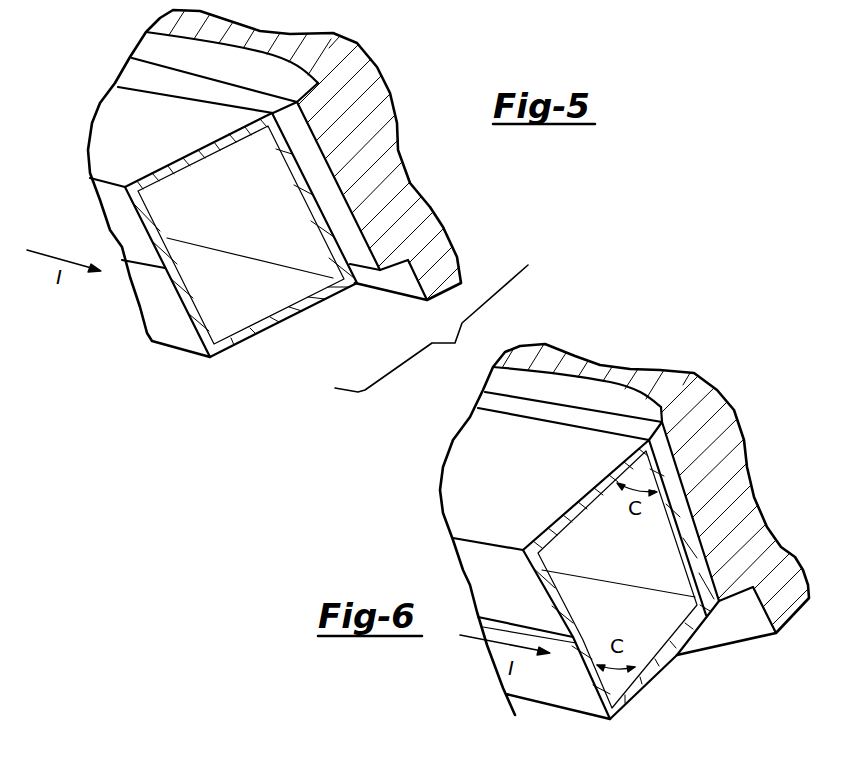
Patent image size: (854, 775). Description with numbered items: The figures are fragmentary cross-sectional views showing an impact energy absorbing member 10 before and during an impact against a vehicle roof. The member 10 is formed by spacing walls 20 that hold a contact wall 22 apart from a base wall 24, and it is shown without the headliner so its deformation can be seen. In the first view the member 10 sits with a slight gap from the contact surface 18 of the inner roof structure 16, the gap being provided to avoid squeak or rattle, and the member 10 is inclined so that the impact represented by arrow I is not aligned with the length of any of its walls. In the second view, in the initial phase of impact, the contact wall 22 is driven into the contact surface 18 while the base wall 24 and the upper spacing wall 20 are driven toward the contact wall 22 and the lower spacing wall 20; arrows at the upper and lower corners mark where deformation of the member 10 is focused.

In FIG. 5, the impact energy absorbing member 10 is at (170, 366).
In FIG. 6, the impact energy absorbing member 10 is at (470, 475).
In FIG. 5, the inner roof structure 16 is at (365, 74).
In FIG. 6, the inner roof structure 16 is at (727, 460).
In FIG. 5, the contact surface 18 is at (340, 217).
In FIG. 6, the contact surface 18 is at (674, 545).
In FIG. 5, the spacing walls 20 is at (118, 127).
In FIG. 6, the spacing walls 20 is at (473, 512).
In FIG. 5, the contact wall 22 is at (308, 252).
In FIG. 6, the contact wall 22 is at (672, 571).
In FIG. 5, the base wall 24 is at (127, 233).
In FIG. 6, the base wall 24 is at (483, 587).